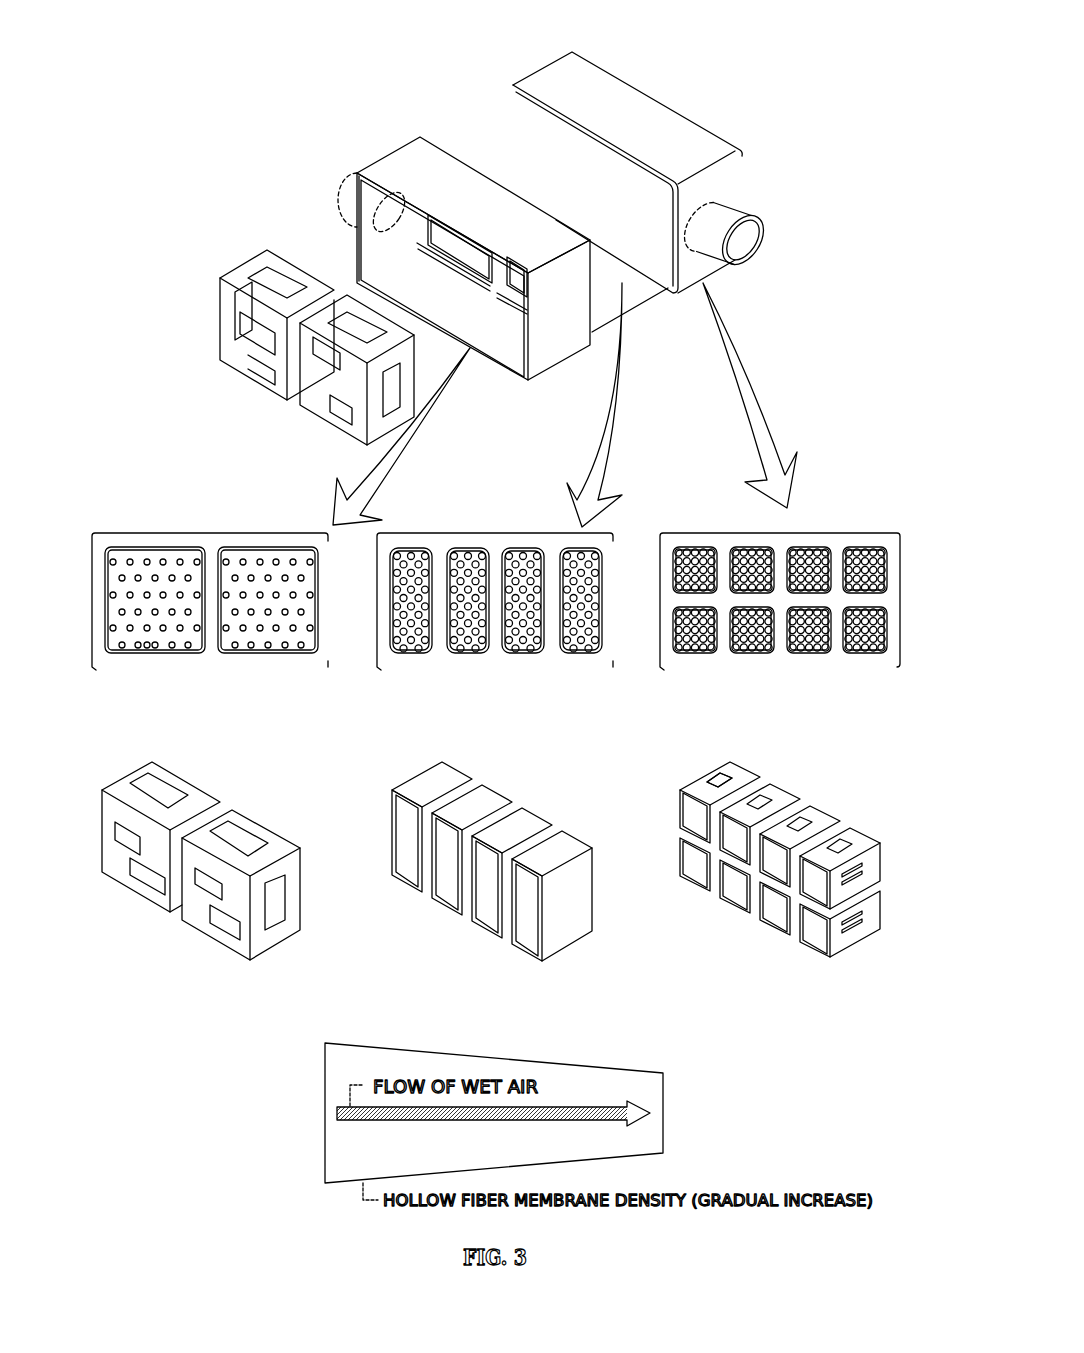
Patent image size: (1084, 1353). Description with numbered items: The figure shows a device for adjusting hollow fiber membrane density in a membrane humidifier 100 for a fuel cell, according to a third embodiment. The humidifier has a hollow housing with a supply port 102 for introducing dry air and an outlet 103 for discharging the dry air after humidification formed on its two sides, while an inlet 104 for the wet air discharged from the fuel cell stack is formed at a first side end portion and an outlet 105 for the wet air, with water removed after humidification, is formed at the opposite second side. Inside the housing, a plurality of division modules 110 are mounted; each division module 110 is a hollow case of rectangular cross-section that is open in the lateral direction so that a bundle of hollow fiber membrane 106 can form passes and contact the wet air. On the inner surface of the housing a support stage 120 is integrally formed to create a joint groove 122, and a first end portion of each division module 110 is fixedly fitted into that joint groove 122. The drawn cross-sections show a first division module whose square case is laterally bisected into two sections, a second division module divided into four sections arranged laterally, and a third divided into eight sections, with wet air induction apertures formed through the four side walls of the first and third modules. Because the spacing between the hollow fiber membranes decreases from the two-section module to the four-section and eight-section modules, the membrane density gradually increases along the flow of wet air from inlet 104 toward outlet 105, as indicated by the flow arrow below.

The membrane humidifier 100 is at (388, 118).
The supply port 102 is at (640, 93).
The outlet 103 is at (357, 248).
The inlet 104 is at (347, 197).
The outlet 105 is at (727, 213).
The hollow fiber membrane 106 is at (145, 648).
The division module 110 is at (502, 866).
The support stage 120 is at (497, 320).
The joint groove 122 is at (477, 295).